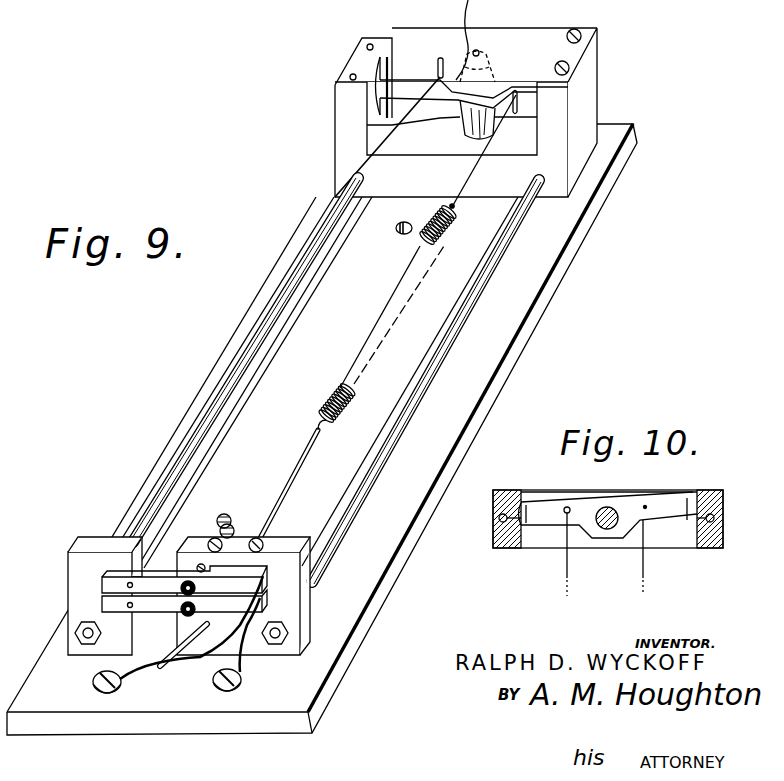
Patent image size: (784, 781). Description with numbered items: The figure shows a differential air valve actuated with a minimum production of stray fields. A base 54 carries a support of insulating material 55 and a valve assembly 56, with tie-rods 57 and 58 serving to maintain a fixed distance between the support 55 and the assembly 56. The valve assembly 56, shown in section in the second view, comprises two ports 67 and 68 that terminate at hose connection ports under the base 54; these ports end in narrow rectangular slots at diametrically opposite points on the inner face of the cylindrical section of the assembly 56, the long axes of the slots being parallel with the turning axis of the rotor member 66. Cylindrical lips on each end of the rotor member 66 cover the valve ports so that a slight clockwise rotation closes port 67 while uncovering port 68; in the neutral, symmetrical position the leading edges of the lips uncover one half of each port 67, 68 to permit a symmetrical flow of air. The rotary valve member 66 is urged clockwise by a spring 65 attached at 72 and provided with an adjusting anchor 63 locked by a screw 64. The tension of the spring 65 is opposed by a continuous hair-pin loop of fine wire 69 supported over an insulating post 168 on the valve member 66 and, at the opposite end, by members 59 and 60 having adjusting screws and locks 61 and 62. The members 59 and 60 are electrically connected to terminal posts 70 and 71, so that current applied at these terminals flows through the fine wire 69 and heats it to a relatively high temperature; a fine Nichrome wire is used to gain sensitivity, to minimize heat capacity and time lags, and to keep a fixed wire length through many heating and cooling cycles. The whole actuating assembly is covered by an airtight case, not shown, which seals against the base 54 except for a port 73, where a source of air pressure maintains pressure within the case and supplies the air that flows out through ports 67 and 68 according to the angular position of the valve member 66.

In FIG. 9, the base 54 is at (578, 234).
In FIG. 9, the support of insulating material 55 is at (308, 592).
In FIG. 9, the valve assembly 56 is at (596, 141).
In FIG. 10, the valve assembly 56 is at (723, 503).
In FIG. 9, the tie-rod 57 is at (512, 228).
In FIG. 9, the tie-rod 58 is at (320, 232).
In FIG. 9, the member 59 is at (102, 586).
In FIG. 9, the member 60 is at (102, 604).
In FIG. 9, the adjusting screw and lock 61 is at (185, 596).
In FIG. 9, the adjusting screw and lock 62 is at (189, 617).
In FIG. 9, the adjusting anchor 63 is at (296, 473).
In FIG. 9, the screw 64 is at (262, 541).
In FIG. 9, the spring 65 is at (447, 245).
In FIG. 9, the rotor member 66 is at (403, 80).
In FIG. 10, the rotor member 66 is at (623, 503).
In FIG. 10, the port 67 is at (707, 524).
In FIG. 10, the port 68 is at (503, 524).
In FIG. 9, the hair-pin loop of fine wire 69 is at (307, 288).
In FIG. 10, the hair-pin loop of fine wire 69 is at (570, 575).
In FIG. 9, the terminal post 70 is at (107, 697).
In FIG. 9, the terminal post 71 is at (227, 696).
In FIG. 9, the spring attachment point 72 is at (516, 114).
In FIG. 10, the spring attachment point 72 is at (650, 502).
In FIG. 9, the port 73 is at (400, 234).
In FIG. 9, the insulating post 168 is at (442, 58).